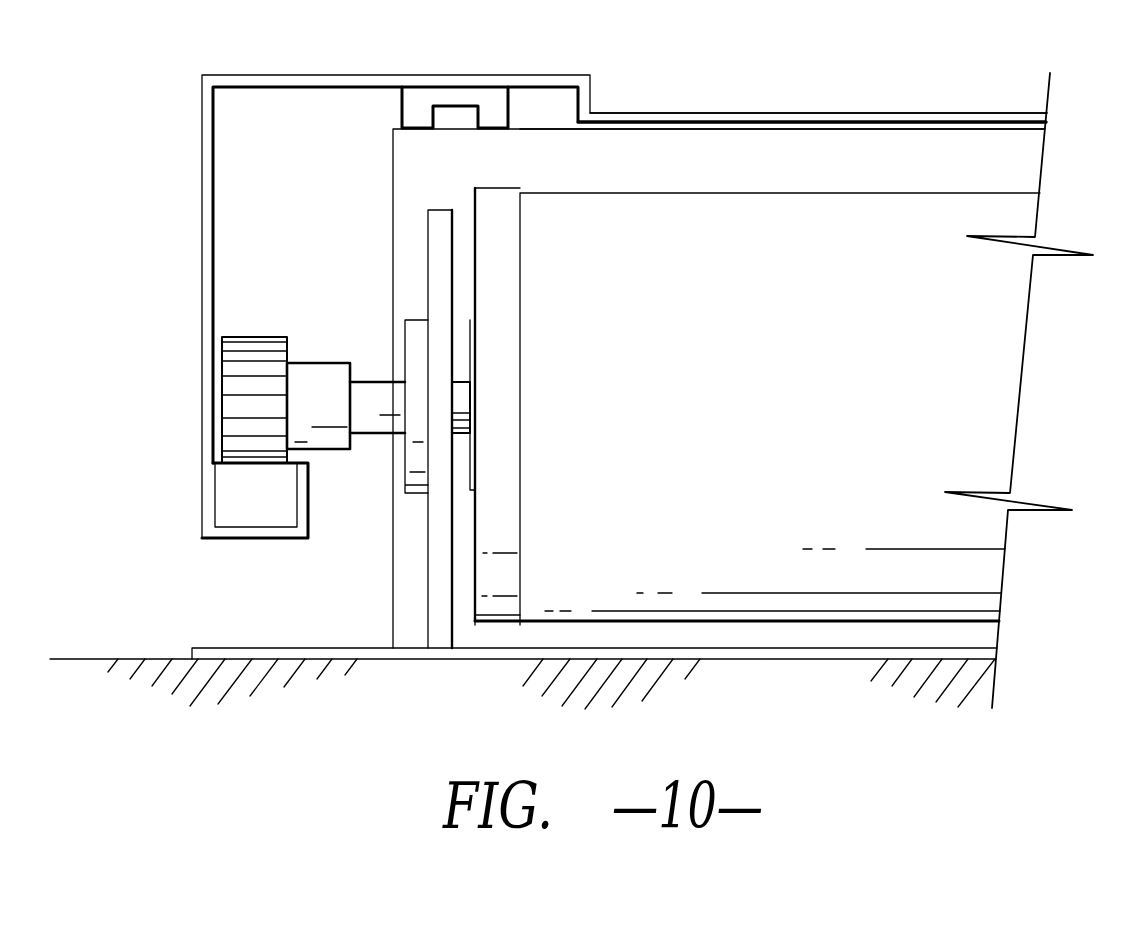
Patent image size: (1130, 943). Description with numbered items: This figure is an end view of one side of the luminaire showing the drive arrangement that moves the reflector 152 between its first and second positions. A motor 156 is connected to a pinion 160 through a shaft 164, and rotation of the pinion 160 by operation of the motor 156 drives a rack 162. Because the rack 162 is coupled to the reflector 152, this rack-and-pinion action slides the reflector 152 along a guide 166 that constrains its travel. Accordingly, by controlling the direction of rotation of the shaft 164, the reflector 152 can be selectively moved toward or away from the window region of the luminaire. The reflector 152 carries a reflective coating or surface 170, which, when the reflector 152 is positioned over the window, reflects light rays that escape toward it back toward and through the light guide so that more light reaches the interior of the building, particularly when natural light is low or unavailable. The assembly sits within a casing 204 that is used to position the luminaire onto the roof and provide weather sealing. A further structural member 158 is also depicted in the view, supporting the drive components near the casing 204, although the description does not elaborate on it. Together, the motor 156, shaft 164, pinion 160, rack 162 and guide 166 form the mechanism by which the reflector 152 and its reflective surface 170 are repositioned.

The reflector 152 is at (317, 73).
The motor 156 is at (995, 408).
The support post 158 is at (407, 620).
The pinion 160 is at (248, 335).
The rack 162 is at (222, 493).
The shaft 164 is at (380, 390).
The guide 166 is at (490, 100).
The reflective coating or surface 170 is at (782, 123).
The casing 204 is at (240, 647).